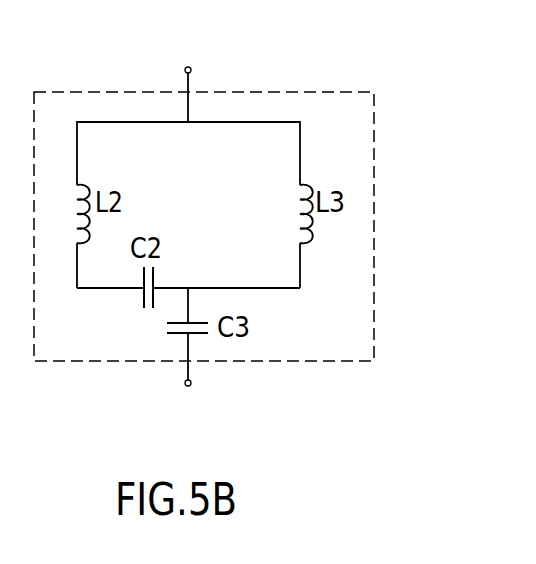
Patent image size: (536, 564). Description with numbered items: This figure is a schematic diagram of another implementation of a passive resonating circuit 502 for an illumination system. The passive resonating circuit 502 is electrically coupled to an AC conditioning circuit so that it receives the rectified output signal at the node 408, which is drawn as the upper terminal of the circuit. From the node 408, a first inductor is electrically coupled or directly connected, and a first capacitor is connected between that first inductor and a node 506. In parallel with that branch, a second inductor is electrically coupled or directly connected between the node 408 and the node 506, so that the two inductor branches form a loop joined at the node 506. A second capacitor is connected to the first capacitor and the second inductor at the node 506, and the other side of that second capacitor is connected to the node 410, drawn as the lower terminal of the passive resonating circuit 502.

The node 408 is at (193, 70).
The node 410 is at (186, 387).
The passive resonating circuit 502 is at (278, 92).
The node 506 is at (262, 288).